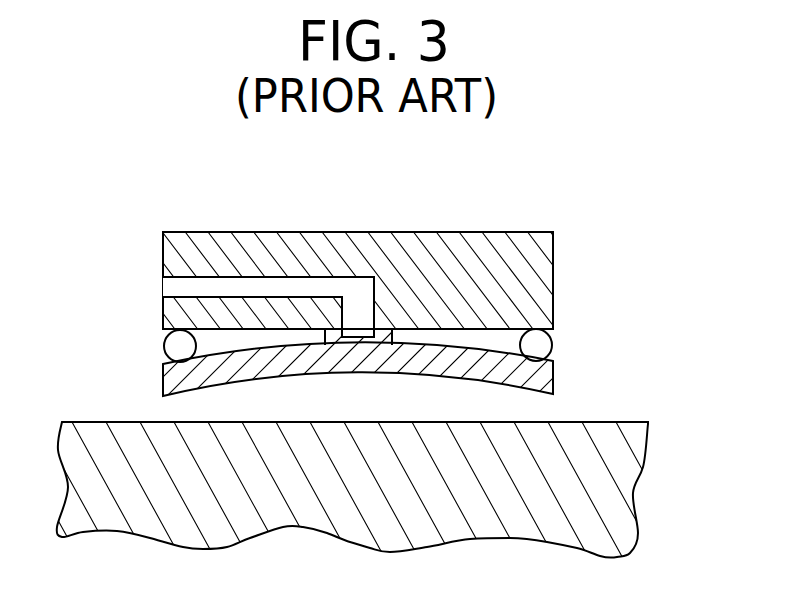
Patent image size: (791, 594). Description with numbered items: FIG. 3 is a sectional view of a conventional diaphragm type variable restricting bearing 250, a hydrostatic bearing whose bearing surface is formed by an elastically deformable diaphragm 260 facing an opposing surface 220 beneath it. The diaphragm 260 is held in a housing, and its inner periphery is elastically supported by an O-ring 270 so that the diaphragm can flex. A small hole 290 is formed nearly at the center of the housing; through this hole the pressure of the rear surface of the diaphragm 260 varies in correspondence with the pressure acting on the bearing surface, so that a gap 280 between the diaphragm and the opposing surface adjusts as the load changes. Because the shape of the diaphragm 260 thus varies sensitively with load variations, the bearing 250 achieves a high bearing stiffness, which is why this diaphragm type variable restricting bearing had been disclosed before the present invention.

The substrate 220 is at (580, 488).
The diaphragm type variable restricting bearing 250 is at (384, 198).
The diaphragm 260 is at (487, 383).
The O-ring 270 is at (553, 343).
The gap 280 is at (230, 408).
The small hole 290 is at (188, 287).